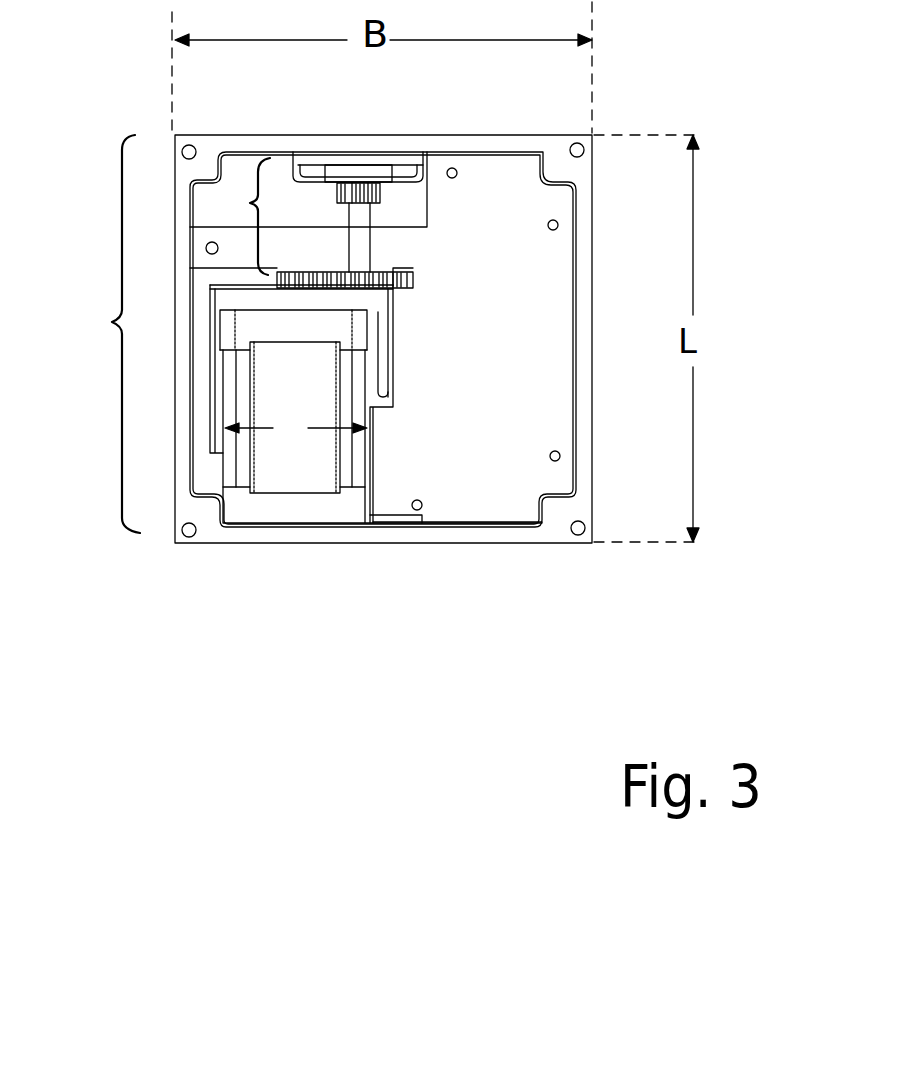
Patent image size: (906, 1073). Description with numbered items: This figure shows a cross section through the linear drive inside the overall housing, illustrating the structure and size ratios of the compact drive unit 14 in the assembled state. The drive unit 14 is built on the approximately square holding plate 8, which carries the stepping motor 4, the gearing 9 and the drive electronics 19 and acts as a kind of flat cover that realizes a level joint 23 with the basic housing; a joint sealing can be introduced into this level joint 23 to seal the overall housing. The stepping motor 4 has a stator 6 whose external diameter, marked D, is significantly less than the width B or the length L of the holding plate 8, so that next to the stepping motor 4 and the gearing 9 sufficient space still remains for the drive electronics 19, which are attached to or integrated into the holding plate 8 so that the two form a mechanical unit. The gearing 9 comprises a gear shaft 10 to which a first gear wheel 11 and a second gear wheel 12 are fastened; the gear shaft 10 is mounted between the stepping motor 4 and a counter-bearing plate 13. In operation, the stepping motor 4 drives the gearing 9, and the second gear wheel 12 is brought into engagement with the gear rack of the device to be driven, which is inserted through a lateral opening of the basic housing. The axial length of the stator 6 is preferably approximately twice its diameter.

The stepping motor 4 is at (298, 460).
The stator 6 is at (352, 452).
The holding plate 8 is at (585, 308).
The gearing 9 is at (308, 218).
The gear shaft 10 is at (366, 242).
The first gear wheel 11 is at (415, 280).
The second gear wheel 12 is at (380, 193).
The counter-bearing plate 13 is at (365, 162).
The drive unit 14 is at (103, 334).
The drive electronics 19 is at (502, 403).
The level joint 23 is at (532, 531).